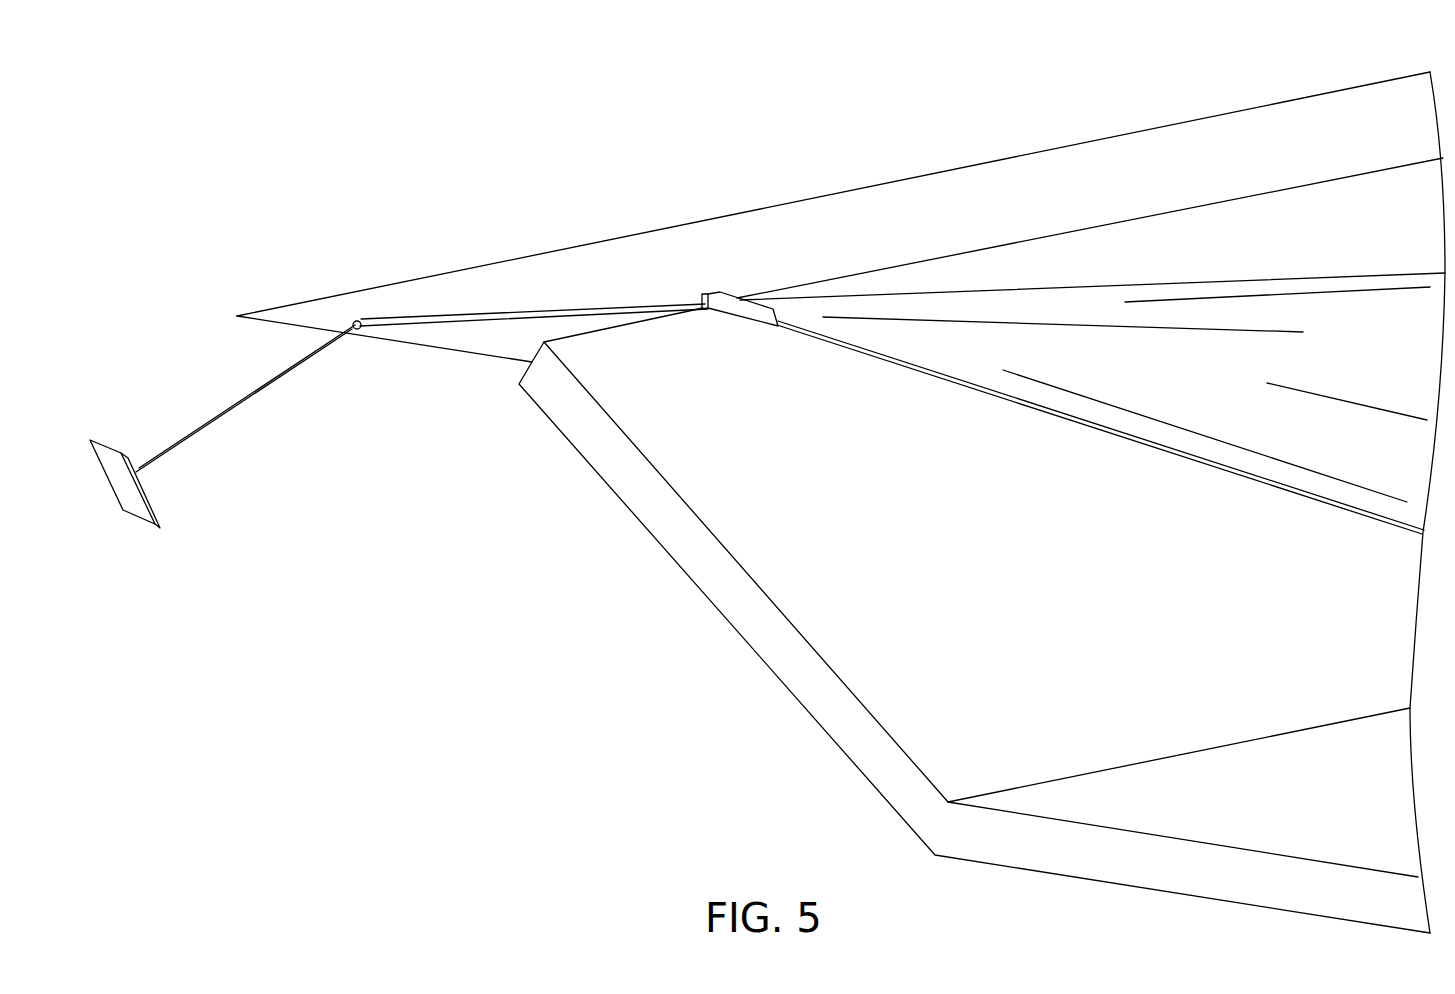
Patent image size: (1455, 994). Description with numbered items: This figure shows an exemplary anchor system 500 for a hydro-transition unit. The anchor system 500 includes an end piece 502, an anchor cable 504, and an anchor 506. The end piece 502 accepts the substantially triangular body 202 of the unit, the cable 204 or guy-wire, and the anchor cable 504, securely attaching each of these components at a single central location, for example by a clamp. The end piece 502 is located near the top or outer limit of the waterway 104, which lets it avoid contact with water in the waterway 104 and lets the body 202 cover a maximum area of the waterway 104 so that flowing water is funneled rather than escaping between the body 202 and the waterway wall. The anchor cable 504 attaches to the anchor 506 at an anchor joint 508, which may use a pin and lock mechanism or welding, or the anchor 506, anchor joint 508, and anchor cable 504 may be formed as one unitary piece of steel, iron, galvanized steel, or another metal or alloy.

The anchor system 500 is at (983, 73).
The waterway 104 is at (1240, 826).
The body 202 is at (1362, 272).
The cable 204 is at (1273, 486).
The end piece 502 is at (738, 297).
The anchor cable 504 is at (578, 310).
The anchor 506 is at (221, 415).
The anchor joint 508 is at (355, 317).